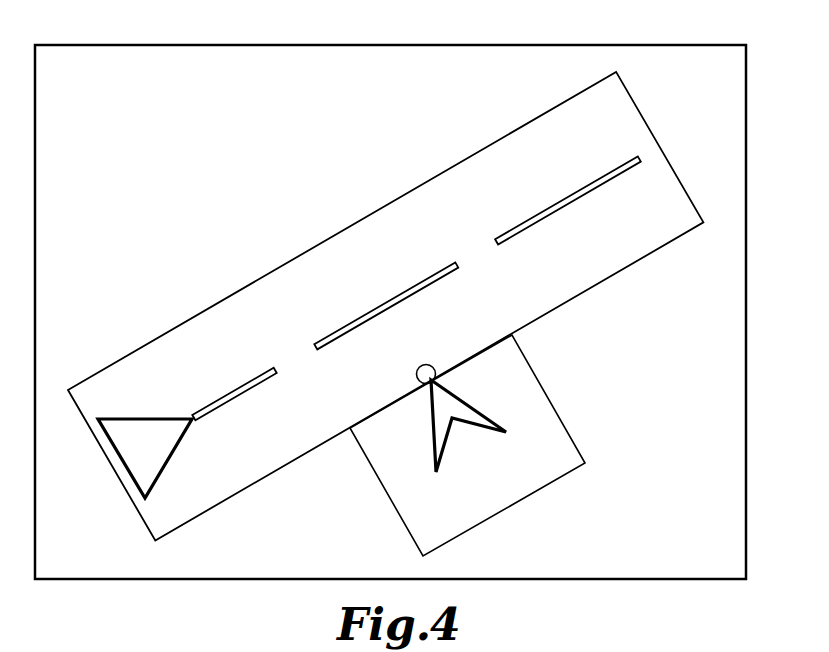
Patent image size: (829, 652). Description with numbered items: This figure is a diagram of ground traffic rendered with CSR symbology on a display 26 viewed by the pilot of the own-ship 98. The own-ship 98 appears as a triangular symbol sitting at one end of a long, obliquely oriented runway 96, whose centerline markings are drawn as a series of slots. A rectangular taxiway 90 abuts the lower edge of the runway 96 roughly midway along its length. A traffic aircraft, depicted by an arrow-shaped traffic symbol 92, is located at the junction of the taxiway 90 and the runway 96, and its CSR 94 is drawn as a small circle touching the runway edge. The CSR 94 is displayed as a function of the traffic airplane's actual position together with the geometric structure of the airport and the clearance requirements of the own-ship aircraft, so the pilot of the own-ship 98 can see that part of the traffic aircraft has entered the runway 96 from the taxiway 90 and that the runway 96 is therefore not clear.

The display screen 26 is at (700, 45).
The taxiway 90 is at (567, 432).
The traffic symbol 92 is at (458, 398).
The CSR 94 is at (416, 377).
The runway 96 is at (635, 263).
The own-ship 98 is at (128, 418).